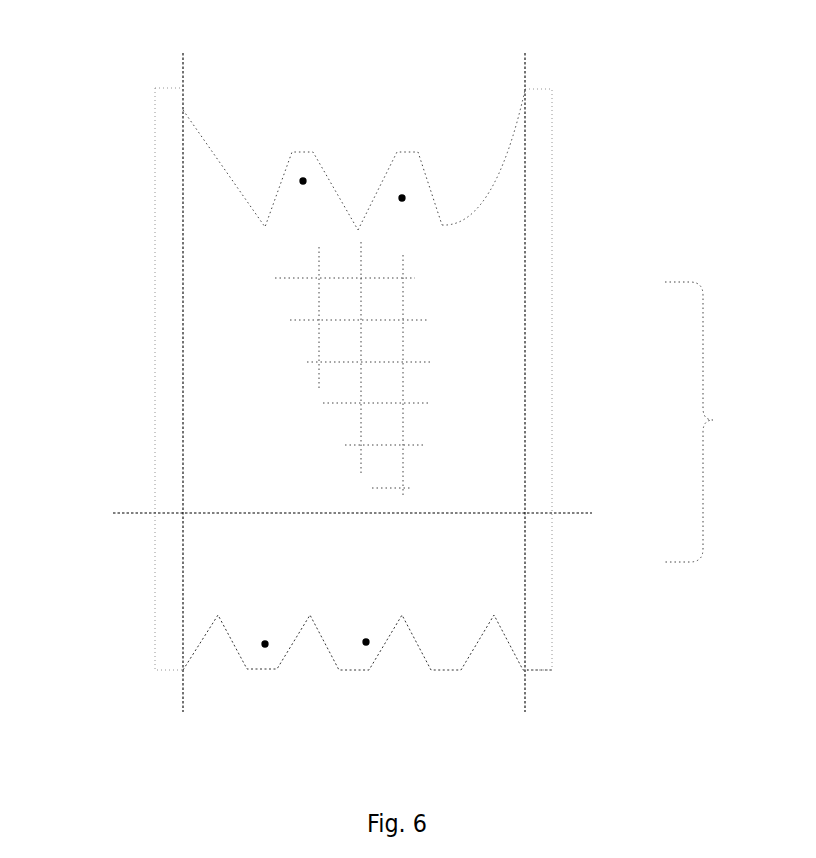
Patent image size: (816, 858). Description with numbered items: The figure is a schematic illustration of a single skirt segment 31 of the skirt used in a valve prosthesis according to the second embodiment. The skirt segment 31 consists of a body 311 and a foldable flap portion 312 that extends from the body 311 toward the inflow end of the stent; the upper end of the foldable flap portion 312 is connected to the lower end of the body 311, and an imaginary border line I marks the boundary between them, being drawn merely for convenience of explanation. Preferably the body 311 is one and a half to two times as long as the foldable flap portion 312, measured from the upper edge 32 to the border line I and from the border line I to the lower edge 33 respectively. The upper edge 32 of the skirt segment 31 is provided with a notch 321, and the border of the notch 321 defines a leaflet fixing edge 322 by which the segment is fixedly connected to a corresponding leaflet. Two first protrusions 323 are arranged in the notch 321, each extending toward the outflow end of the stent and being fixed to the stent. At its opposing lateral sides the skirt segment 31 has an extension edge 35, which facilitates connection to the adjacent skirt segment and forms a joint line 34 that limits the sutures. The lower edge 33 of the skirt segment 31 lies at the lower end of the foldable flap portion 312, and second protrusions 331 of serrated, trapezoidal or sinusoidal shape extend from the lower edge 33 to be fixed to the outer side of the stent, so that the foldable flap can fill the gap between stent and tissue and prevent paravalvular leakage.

The skirt segment 31 is at (157, 254).
The body 311 is at (440, 377).
The foldable flap portion 312 is at (502, 580).
The upper edge of skirt 32 is at (162, 88).
The notch 321 is at (364, 162).
The leaflet fixing edge 322 is at (503, 165).
The first protrusion 323 is at (402, 198).
The lower edge of skirt 33 is at (443, 670).
The second protrusion 331 is at (366, 642).
The joint line 34 is at (525, 214).
The extension edge 35 is at (539, 122).
The border line I is at (299, 513).